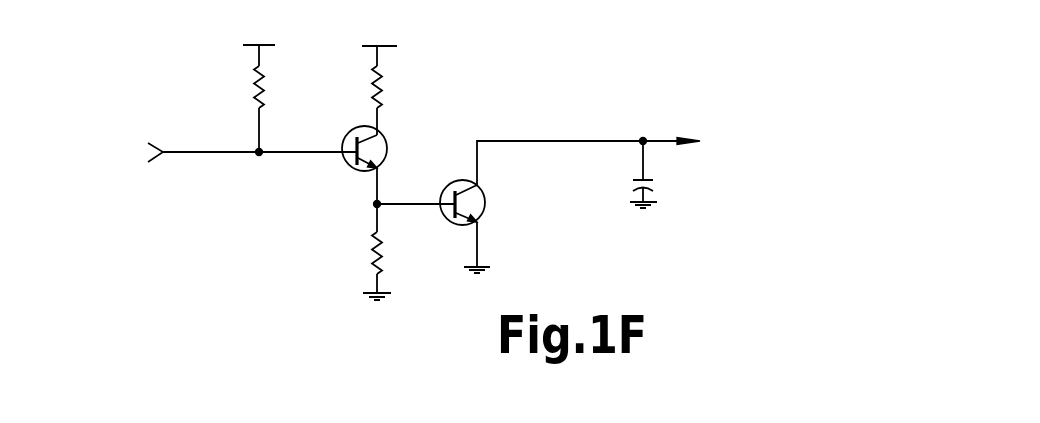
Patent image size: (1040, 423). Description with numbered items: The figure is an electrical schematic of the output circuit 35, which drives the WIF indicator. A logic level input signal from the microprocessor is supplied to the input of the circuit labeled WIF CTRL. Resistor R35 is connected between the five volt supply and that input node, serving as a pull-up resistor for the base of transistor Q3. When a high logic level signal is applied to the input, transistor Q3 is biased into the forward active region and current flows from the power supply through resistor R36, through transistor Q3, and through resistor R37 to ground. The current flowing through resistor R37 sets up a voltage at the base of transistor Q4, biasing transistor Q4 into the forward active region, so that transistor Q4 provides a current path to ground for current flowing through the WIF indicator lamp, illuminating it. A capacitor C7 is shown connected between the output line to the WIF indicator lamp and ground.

The output circuit 35 is at (345, 255).
The resistor R35 is at (265, 70).
The resistor R36 is at (383, 70).
The resistor R37 is at (380, 245).
The transistor Q3 is at (388, 143).
The transistor Q4 is at (485, 195).
The capacitor C7 is at (637, 188).